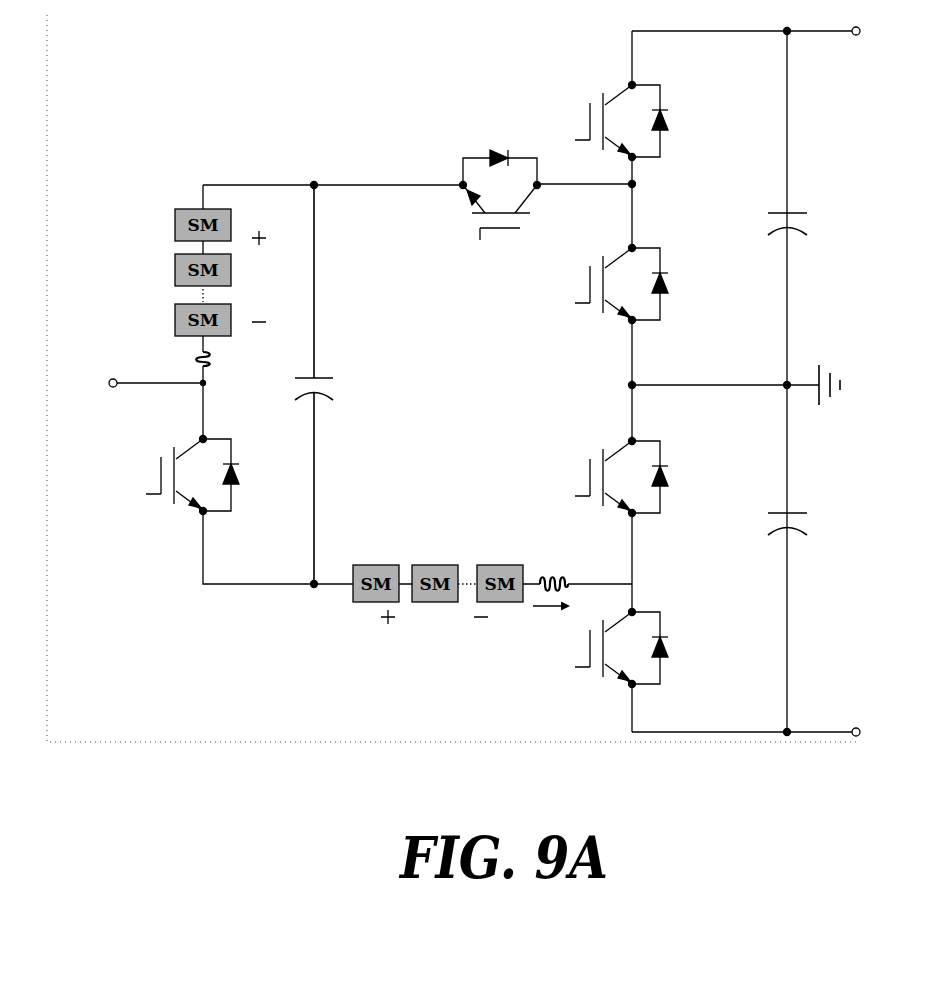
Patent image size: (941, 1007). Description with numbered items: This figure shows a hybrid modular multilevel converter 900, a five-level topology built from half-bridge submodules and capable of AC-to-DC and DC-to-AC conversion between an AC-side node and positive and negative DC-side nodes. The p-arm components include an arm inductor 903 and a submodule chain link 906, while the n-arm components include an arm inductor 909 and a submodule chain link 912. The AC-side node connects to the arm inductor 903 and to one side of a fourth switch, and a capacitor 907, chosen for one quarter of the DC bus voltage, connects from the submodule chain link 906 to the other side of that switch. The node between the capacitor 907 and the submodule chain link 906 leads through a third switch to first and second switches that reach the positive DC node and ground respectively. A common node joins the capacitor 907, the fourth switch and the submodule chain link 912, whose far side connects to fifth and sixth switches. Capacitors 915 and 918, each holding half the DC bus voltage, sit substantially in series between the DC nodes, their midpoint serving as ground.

The hybrid modular multilevel converter 900 is at (90, 88).
The arm inductor 903 is at (155, 352).
The submodule chain link 906 is at (152, 241).
The capacitor 907 is at (353, 346).
The arm inductor 909 is at (542, 559).
The submodule chain link 912 is at (396, 555).
The capacitor 915 is at (762, 203).
The capacitor 918 is at (762, 500).